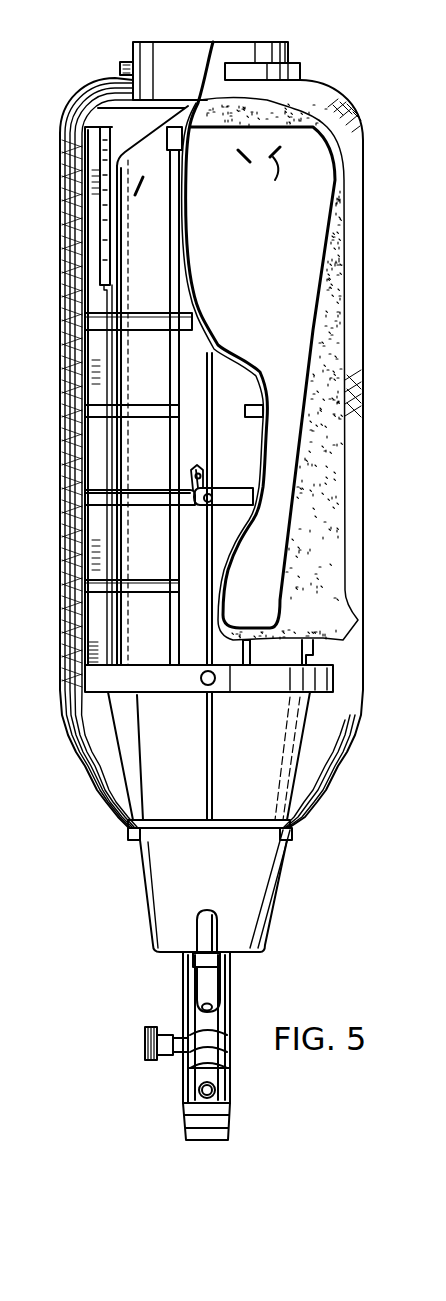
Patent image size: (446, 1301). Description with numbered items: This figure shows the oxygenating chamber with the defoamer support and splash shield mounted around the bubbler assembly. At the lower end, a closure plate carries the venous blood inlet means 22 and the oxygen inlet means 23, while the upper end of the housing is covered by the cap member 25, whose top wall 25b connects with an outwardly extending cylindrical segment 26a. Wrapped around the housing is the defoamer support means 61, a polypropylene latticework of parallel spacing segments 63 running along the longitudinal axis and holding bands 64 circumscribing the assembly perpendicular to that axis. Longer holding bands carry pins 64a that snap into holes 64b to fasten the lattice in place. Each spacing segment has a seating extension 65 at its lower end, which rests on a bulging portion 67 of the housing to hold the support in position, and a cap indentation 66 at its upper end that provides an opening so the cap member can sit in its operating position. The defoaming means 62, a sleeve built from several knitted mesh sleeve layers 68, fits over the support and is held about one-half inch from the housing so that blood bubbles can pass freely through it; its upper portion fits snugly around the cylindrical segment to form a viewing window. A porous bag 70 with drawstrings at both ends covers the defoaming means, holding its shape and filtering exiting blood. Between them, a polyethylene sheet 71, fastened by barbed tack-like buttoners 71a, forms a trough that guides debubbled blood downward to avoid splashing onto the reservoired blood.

The cap member 25 is at (110, 120).
The top wall of the cap member 25b is at (143, 42).
The cylindrical segment of the cap member 26a is at (133, 50).
The cap indentation 66 is at (113, 256).
The tack-like buttoners 71a is at (260, 335).
The holes 64b is at (200, 476).
The holding bands 64 is at (157, 493).
The polyethylene sheet 71 is at (302, 465).
The pins 64a is at (213, 498).
The spacing segments 63 is at (170, 527).
The sleeve layers 68 is at (83, 583).
The defoaming means 62 is at (100, 678).
The defoamer support means 61 is at (112, 693).
The seating extension 65 is at (313, 660).
The bulging portion 67 is at (80, 750).
The porous bag 70 is at (112, 807).
The oxygen inlet means 23 is at (190, 970).
The venous blood inlet means 22 is at (185, 1075).